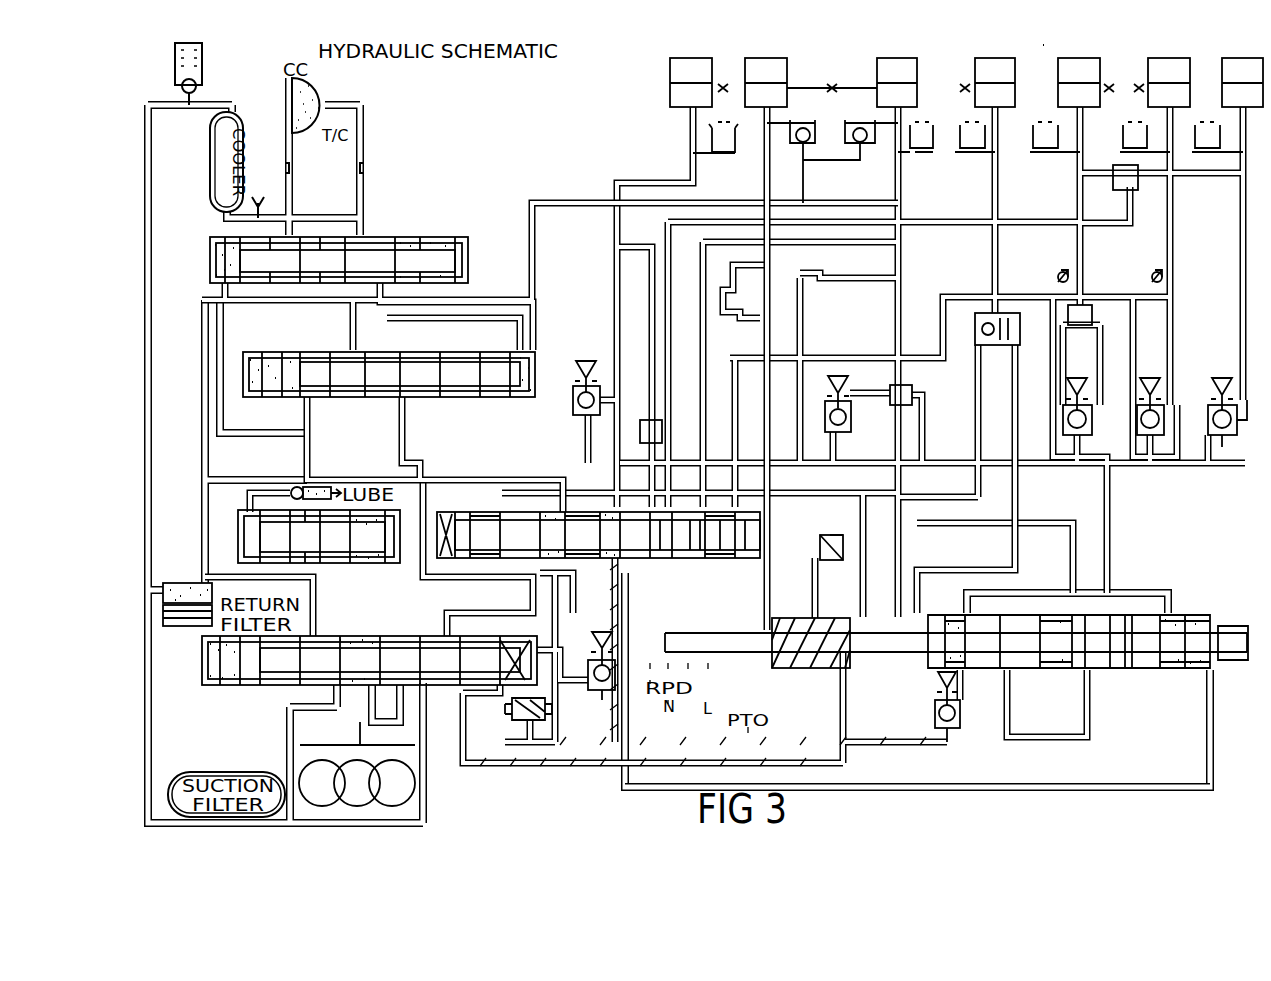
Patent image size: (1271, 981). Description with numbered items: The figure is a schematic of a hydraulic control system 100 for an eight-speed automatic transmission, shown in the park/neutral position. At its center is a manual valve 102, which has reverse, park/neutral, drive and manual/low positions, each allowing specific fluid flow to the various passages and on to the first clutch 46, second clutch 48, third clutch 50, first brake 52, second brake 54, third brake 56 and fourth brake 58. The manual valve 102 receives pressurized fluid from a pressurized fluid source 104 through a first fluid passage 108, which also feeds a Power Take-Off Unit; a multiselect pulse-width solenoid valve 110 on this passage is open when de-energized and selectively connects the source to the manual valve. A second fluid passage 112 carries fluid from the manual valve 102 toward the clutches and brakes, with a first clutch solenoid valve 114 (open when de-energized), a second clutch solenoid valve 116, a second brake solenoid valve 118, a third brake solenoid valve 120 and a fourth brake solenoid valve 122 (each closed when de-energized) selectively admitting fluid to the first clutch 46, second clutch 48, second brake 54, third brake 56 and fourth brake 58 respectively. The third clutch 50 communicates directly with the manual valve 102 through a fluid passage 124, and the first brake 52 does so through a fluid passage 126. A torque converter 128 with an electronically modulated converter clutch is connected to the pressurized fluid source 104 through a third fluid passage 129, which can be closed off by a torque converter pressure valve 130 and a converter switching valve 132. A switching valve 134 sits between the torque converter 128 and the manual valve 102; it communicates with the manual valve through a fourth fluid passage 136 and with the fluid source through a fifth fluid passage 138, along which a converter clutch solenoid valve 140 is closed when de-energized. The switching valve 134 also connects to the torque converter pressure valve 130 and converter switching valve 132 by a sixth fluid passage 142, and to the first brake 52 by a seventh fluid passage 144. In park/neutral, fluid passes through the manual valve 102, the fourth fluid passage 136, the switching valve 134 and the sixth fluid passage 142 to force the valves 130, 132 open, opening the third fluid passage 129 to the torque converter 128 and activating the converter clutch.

The first clutch 46 is at (670, 72).
The second clutch 48 is at (878, 70).
The third clutch 50 is at (787, 78).
The first brake 52 is at (975, 70).
The second brake 54 is at (1058, 80).
The third brake 56 is at (1222, 68).
The fourth brake 58 is at (1148, 70).
The hydraulic control system 100 is at (1043, 45).
The manual valve 102 is at (1184, 600).
The pressurized fluid source 104 is at (438, 770).
The first fluid passage 108 is at (537, 737).
The multiselect pulse-width solenoid valve 110 is at (953, 742).
The second fluid passage 112 is at (869, 540).
The first clutch solenoid valve 114 is at (562, 418).
The second clutch solenoid valve 116 is at (841, 435).
The second brake solenoid valve 118 is at (1067, 416).
The third brake solenoid valve 120 is at (1225, 448).
The fourth brake solenoid valve 122 is at (1154, 435).
The fluid passage 124 is at (770, 527).
The fluid passage 126 is at (1016, 506).
The torque converter 128 is at (392, 112).
The third fluid passage 129 is at (362, 187).
The torque converter pressure valve 130 is at (536, 358).
The converter switching valve 132 is at (465, 250).
The switching valve 134 is at (580, 487).
The fourth fluid passage 136 is at (1090, 783).
The fifth fluid passage 138 is at (527, 592).
The converter clutch solenoid valve 140 is at (602, 700).
The sixth fluid passage 142 is at (335, 473).
The seventh fluid passage 144 is at (970, 404).